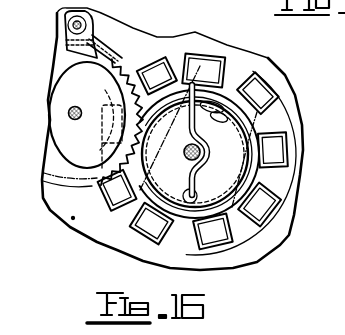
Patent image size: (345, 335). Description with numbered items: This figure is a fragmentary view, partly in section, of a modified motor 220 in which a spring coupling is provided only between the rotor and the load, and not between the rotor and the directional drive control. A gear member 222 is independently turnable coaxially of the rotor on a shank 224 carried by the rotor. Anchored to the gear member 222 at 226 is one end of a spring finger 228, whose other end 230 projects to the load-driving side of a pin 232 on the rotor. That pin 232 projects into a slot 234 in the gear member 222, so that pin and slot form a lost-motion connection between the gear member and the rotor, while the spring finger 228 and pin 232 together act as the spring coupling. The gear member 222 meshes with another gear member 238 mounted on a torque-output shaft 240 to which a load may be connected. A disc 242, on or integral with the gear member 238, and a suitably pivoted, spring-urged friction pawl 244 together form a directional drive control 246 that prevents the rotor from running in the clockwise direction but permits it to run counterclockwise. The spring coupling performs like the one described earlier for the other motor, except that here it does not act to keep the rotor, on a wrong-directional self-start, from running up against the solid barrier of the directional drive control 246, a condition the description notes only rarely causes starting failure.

The modified motor 220 is at (249, 69).
The gear member 222 is at (273, 123).
The shank 224 is at (188, 157).
The anchor point of spring finger 226 is at (186, 195).
The spring finger 228 is at (189, 150).
The other end of spring finger 230 is at (208, 107).
The pin 232 is at (214, 119).
The slot 234 is at (247, 98).
The gear member 238 is at (112, 62).
The torque-output shaft 240 is at (75, 120).
The disc 242 is at (71, 166).
The friction pawl 244 is at (68, 36).
The directional drive control 246 is at (101, 43).